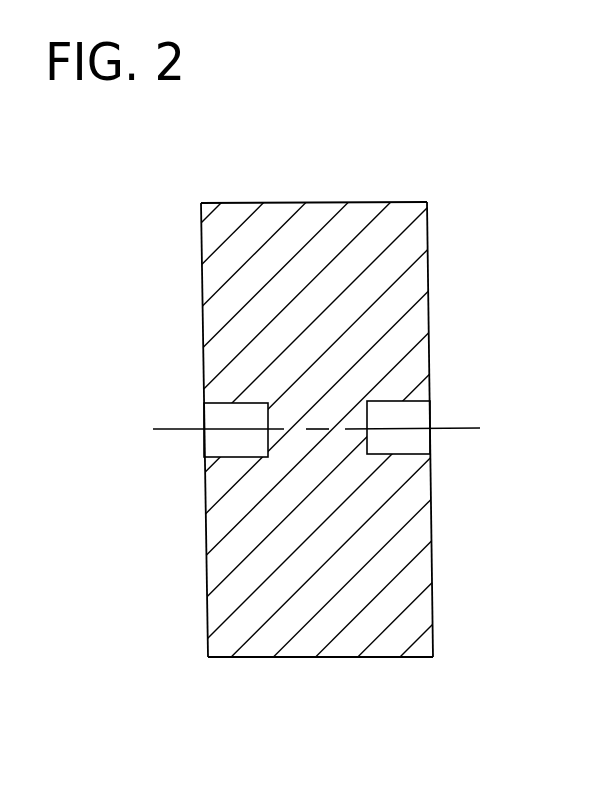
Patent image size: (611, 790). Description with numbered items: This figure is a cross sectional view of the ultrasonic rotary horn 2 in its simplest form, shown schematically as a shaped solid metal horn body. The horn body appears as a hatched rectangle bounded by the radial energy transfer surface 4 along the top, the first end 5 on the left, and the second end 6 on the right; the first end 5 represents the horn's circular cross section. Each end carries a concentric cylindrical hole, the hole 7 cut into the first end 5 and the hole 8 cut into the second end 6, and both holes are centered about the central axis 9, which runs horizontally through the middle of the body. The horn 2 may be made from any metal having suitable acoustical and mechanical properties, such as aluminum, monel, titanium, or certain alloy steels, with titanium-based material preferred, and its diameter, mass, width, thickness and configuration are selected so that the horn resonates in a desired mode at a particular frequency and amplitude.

The ultrasonic rotary horn 2 is at (288, 668).
The radial energy transfer surface 4 is at (360, 202).
The first end 5 is at (208, 587).
The second end 6 is at (432, 523).
The cylindrical hole 7 is at (216, 414).
The cylindrical hole 8 is at (420, 413).
The central axis 9 is at (466, 426).